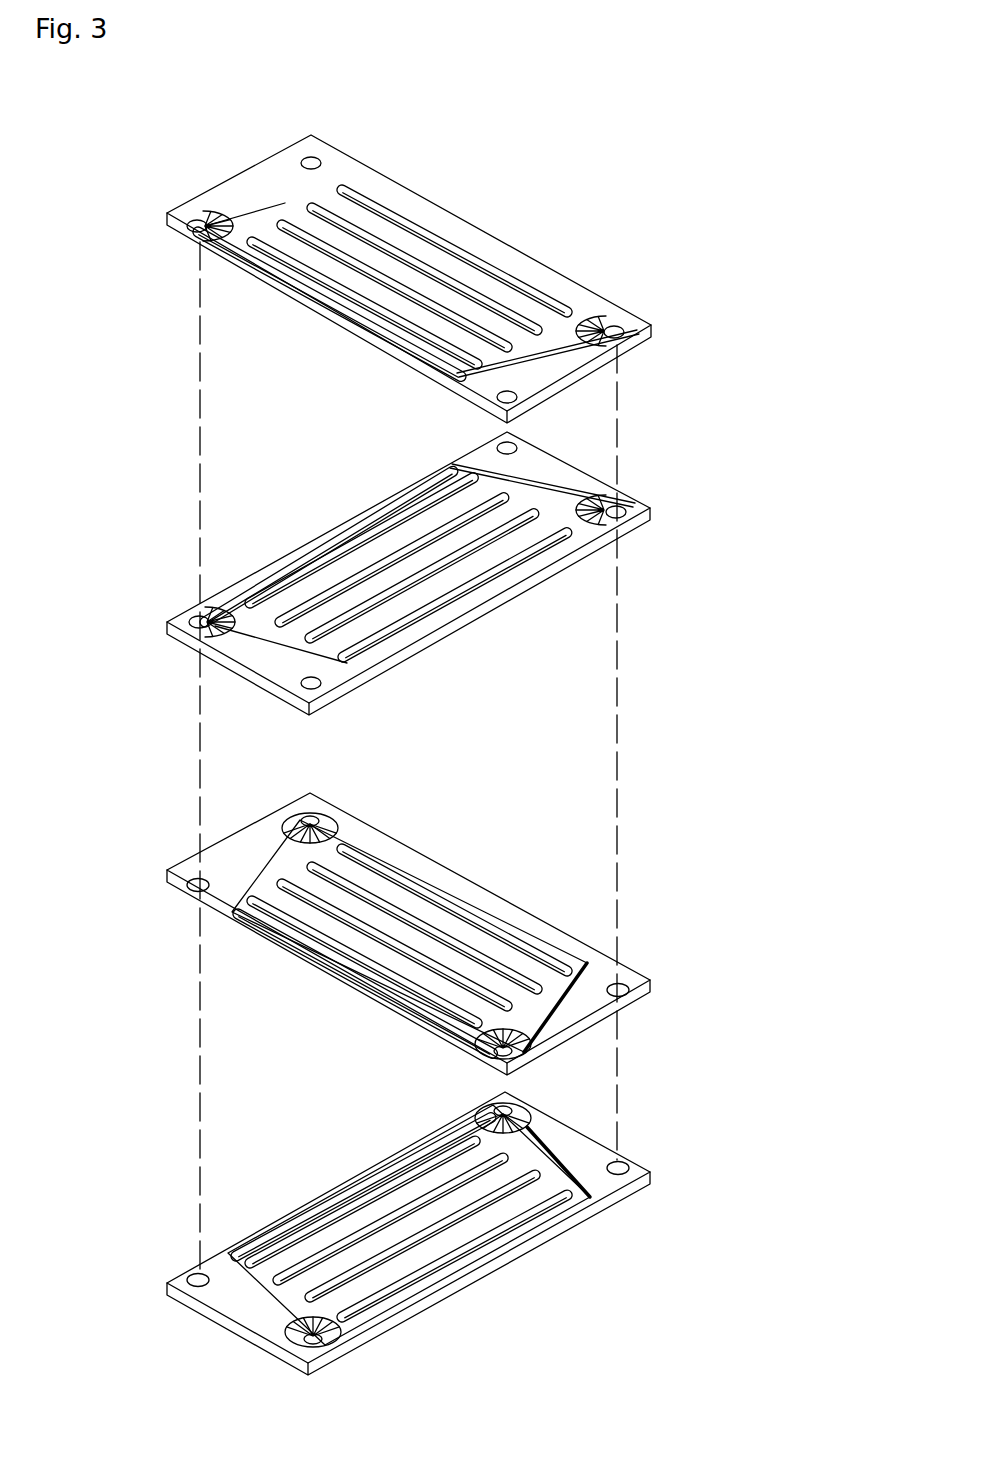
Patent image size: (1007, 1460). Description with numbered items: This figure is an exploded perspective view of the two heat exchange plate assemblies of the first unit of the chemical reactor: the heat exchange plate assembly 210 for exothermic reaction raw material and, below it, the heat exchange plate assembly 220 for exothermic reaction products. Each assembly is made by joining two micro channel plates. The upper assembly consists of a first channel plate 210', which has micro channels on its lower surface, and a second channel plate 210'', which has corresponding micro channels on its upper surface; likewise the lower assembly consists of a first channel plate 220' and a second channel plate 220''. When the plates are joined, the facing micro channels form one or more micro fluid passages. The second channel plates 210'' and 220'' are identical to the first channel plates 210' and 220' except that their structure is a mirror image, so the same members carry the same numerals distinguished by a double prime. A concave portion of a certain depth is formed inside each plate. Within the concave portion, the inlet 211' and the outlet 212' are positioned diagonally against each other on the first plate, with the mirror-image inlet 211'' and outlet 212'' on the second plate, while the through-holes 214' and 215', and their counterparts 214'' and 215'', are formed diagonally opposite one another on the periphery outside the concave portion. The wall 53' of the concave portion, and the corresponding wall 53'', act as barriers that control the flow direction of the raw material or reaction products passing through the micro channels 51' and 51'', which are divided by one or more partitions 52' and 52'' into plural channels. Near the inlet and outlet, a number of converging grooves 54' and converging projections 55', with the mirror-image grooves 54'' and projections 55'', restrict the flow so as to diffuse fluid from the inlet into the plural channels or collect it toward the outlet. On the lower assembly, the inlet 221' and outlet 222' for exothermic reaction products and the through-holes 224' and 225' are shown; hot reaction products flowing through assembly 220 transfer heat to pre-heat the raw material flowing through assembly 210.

The heat exchange plate assembly for exothermic reaction raw material 210 is at (509, 419).
The first channel plate 210' is at (459, 312).
The second channel plate 210'' is at (456, 576).
The inlet 211' is at (149, 253).
The inlet 211'' is at (145, 603).
The outlet 212' is at (605, 331).
The outlet 212'' is at (616, 491).
The through-hole 214' is at (372, 135).
The through-hole 214'' is at (373, 705).
The through-hole 215' is at (595, 407).
The through-hole 215'' is at (448, 423).
The micro channels 51' is at (226, 180).
The micro channels 51'' is at (241, 668).
The partition 52' is at (454, 250).
The partition 52'' is at (356, 540).
The wall of concave portion 53' is at (329, 305).
The wall of concave portion 53'' is at (330, 529).
The converging grooves 54' is at (598, 278).
The converging grooves 54'' is at (589, 570).
The converging projections 55' is at (645, 291).
The converging projections 55'' is at (665, 542).
The heat exchange plate assembly for exothermic reaction products 220 is at (499, 1078).
The first channel plate 220' is at (459, 947).
The second channel plate 220'' is at (462, 1234).
The inlet 221' is at (276, 801).
The outlet 222' is at (445, 1049).
The through-hole 224' is at (127, 880).
The through-hole 225' is at (672, 958).